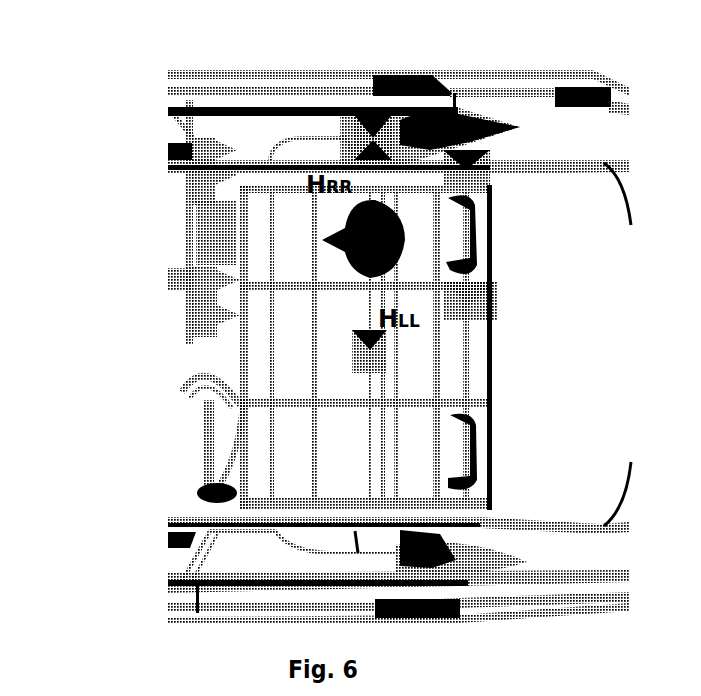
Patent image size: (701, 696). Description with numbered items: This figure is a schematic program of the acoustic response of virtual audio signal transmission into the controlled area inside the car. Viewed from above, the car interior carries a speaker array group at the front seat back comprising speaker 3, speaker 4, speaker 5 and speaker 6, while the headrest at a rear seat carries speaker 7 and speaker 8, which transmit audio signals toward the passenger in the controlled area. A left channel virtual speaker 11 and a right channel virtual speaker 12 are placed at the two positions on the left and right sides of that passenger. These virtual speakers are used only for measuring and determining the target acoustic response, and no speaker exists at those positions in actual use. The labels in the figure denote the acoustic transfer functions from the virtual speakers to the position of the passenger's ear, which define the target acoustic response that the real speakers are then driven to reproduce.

The speaker 3 is at (168, 152).
The speaker 4 is at (185, 192).
The speaker 5 is at (190, 282).
The speaker 6 is at (190, 323).
The speaker 7 is at (493, 163).
The speaker 8 is at (497, 308).
The left channel virtual speaker 11 is at (350, 367).
The right channel virtual speaker 12 is at (353, 121).